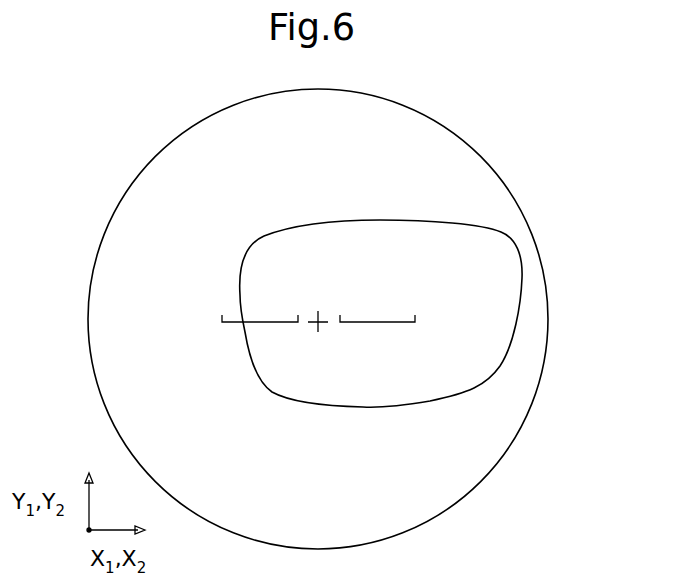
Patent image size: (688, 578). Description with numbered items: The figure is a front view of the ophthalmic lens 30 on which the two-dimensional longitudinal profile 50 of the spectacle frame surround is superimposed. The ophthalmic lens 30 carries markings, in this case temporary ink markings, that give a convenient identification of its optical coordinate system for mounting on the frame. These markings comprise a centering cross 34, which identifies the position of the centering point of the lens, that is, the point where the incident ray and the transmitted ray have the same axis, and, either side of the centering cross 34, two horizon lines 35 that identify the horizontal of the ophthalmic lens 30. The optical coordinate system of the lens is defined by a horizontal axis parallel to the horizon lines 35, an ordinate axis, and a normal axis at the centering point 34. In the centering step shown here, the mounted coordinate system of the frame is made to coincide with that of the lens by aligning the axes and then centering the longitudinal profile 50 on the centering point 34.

The ophthalmic lens 30 is at (468, 143).
The longitudinal profile 50 is at (375, 221).
The centering cross 34 is at (324, 320).
The horizon lines 35 is at (264, 322).